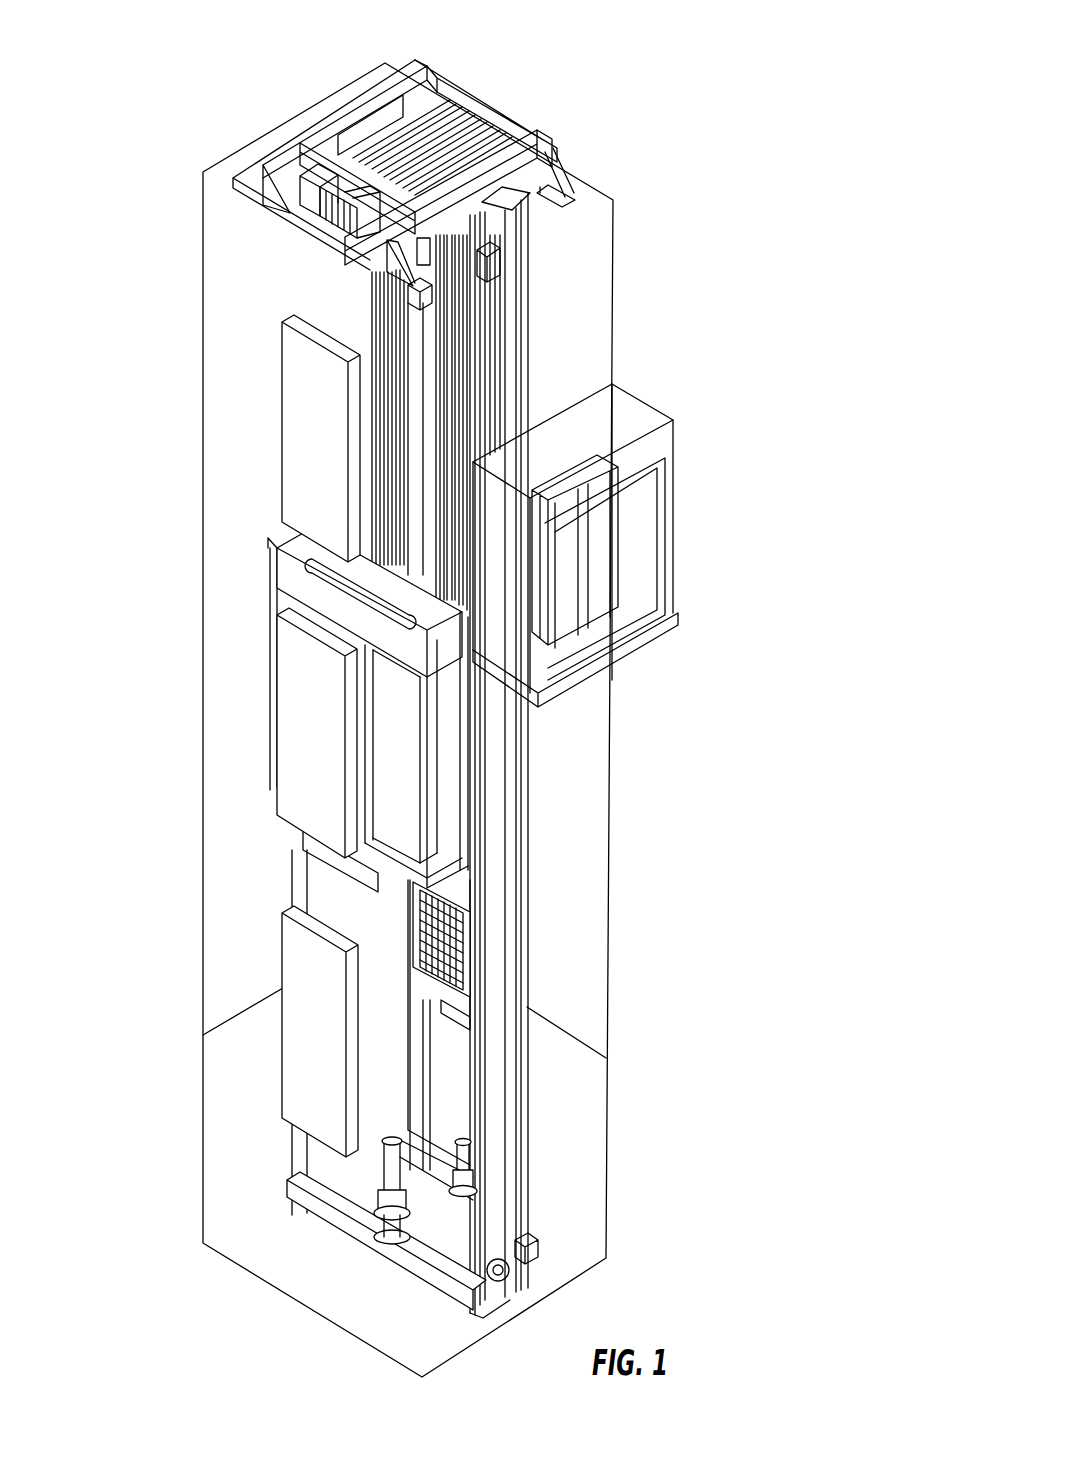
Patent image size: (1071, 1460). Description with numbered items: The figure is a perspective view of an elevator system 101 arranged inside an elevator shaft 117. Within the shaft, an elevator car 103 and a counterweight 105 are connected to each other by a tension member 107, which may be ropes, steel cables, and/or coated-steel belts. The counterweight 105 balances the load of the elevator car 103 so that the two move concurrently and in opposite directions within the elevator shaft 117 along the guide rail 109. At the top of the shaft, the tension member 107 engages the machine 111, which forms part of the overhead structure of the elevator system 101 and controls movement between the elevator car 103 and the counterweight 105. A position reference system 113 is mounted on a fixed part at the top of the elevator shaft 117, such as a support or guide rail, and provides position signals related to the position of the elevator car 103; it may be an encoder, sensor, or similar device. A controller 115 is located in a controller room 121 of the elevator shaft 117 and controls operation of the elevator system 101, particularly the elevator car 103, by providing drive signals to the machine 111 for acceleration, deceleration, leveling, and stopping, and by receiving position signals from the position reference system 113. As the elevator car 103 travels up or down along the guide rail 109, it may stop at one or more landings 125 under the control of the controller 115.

The elevator system 101 is at (438, 691).
The elevator car 103 is at (405, 763).
The counterweight 105 is at (455, 966).
The tension member 107 is at (404, 430).
The guide rail 109 is at (497, 883).
The machine 111 is at (308, 168).
The position reference system 113 is at (497, 265).
The controller 115 is at (617, 555).
The elevator shaft 117 is at (258, 884).
The controller room 121 is at (625, 530).
The landings 125 is at (282, 430).